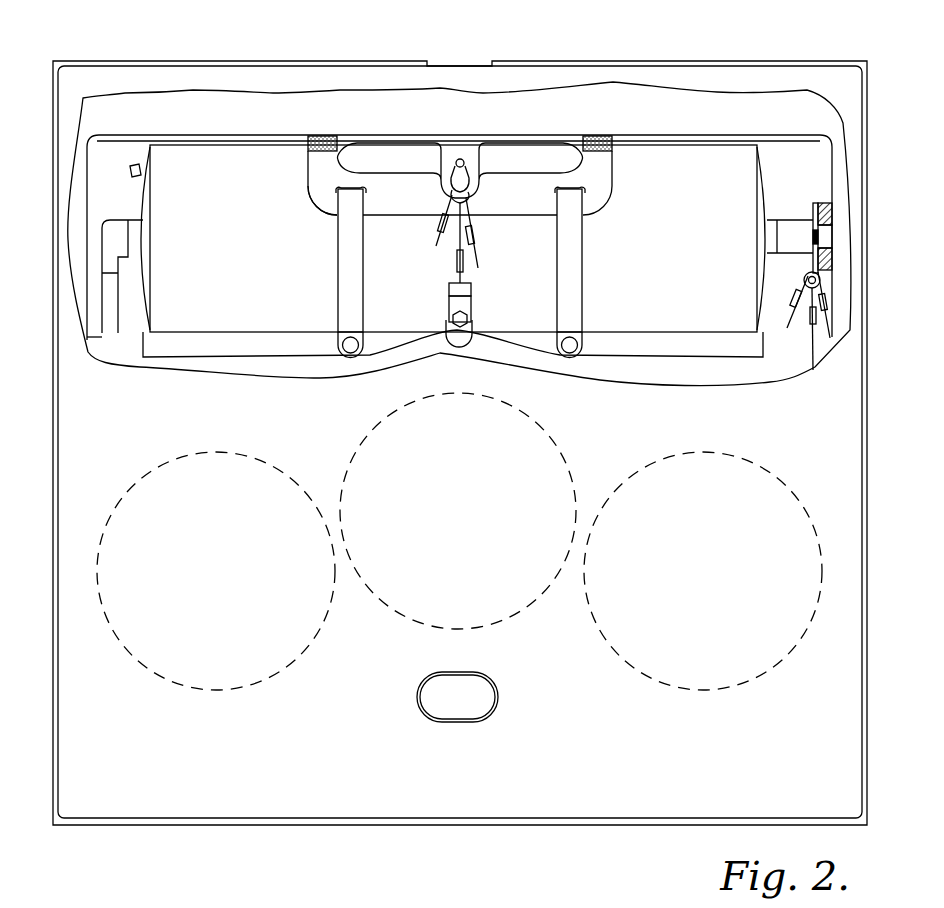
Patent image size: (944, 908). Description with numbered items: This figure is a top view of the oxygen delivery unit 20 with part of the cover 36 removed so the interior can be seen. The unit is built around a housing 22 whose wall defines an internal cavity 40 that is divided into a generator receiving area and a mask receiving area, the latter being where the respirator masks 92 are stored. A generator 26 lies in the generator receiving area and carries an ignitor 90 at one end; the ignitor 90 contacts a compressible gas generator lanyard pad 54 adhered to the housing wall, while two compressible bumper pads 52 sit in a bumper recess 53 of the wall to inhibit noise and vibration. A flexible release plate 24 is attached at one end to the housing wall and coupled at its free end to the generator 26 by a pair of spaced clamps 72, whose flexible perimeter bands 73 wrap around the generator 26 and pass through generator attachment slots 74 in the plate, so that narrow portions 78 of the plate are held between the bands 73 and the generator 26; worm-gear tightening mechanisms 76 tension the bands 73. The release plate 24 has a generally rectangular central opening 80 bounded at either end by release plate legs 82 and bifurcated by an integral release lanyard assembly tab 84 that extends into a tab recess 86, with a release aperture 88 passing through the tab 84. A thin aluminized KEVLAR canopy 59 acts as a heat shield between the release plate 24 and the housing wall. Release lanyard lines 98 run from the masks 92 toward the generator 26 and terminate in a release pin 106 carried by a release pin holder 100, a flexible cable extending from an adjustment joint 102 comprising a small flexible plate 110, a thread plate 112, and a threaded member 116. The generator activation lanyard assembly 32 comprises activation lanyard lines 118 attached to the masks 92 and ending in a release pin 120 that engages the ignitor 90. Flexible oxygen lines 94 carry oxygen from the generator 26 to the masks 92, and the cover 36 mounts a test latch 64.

The oxygen delivery unit 20 is at (97, 44).
The housing 22 is at (47, 776).
The release plate 24 is at (538, 178).
The generator 26 is at (453, 238).
The generator activation lanyard assembly 32 is at (805, 195).
The cover 36 is at (350, 718).
The internal cavity 40 is at (680, 369).
The bumper pads 52 is at (320, 135).
The bumper recess 53 is at (718, 134).
The gas generator lanyard pad 54 is at (833, 212).
The canopy 59 is at (222, 343).
The test latch 64 is at (478, 700).
The clamps 72 is at (326, 311).
The perimeter bands 73 is at (346, 258).
The generator attachment slots 74 is at (335, 192).
The tightening mechanisms 76 is at (348, 353).
The narrow portions 78 is at (338, 207).
The central opening 80 is at (393, 150).
The release plate legs 82 is at (314, 158).
The release lanyard assembly tab 84 is at (476, 160).
The tab recess 86 is at (470, 190).
The release aperture 88 is at (446, 176).
The ignitor 90 is at (780, 230).
The respirator masks 92 is at (746, 462).
The flexible oxygen lines 94 is at (110, 347).
The release lanyard lines 98 is at (441, 238).
The release pin holder 100 is at (457, 160).
The adjustment joint 102 is at (437, 351).
The release pin 106 is at (463, 165).
The small flexible plate 110 is at (472, 286).
The thread plate 112 is at (470, 305).
The threaded member 116 is at (451, 318).
The activation lanyard lines 118 is at (803, 352).
The release pin 120 is at (819, 243).